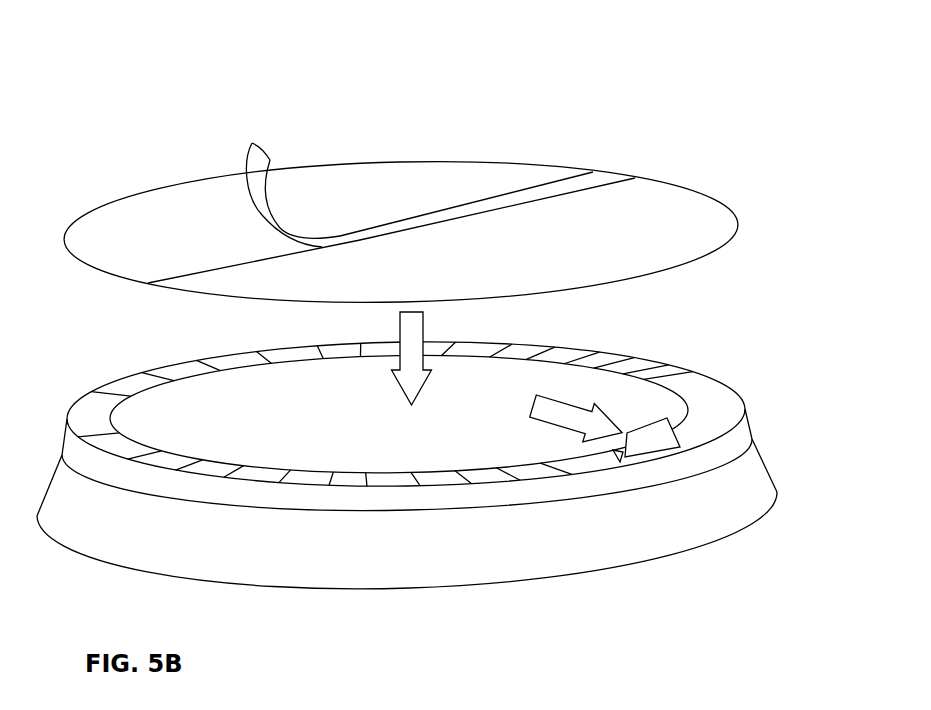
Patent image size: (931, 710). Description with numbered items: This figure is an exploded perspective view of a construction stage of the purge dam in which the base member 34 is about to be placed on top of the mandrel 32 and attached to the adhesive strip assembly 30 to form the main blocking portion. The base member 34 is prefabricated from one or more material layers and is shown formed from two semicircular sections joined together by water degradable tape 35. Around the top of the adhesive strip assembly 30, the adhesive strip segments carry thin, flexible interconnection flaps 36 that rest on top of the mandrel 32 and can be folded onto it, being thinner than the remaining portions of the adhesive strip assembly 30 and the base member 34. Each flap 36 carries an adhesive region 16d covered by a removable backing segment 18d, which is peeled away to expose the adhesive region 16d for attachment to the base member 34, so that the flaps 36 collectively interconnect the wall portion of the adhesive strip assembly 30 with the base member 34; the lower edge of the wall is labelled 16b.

The base member 34 is at (410, 174).
The water degradable tape 35 is at (255, 150).
The adhesive strip assembly 30 is at (682, 528).
The ring outer wall 16b is at (345, 497).
The mandrel 32 is at (326, 428).
The interconnection flaps 36 is at (452, 473).
The adhesive region 16d is at (618, 463).
The removable backing segment 18d is at (658, 430).